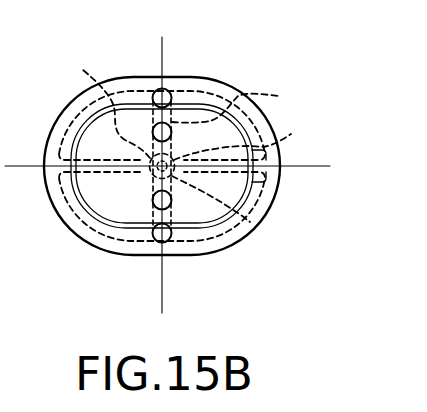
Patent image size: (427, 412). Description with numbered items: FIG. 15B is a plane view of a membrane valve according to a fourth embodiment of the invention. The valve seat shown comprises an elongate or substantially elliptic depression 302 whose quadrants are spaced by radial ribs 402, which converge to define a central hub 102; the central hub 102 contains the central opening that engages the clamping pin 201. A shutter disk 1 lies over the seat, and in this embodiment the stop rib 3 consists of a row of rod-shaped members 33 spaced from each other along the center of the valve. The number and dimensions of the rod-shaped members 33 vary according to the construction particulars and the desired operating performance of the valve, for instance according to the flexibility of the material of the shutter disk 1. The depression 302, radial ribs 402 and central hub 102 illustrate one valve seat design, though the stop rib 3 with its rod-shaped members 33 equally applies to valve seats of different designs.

The shutter disk 1 is at (226, 78).
The stop rib 3 is at (176, 84).
The rod-shaped members 33 is at (172, 203).
The central hub 102 is at (102, 100).
The clamping pin 201 is at (255, 136).
The elongate or substantially elliptic depression 302 is at (86, 228).
The radial ribs 402 is at (247, 101).